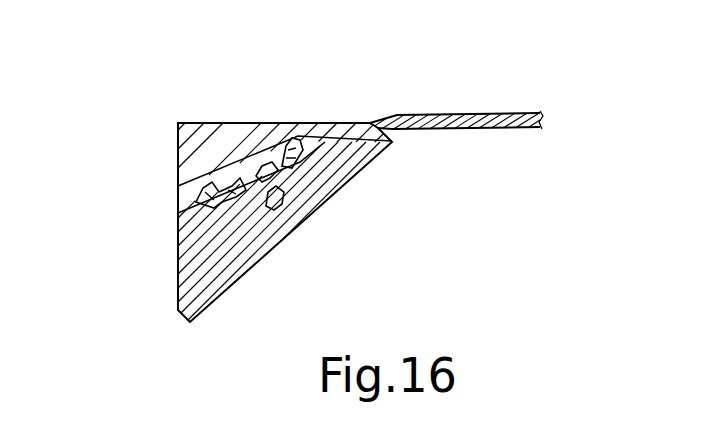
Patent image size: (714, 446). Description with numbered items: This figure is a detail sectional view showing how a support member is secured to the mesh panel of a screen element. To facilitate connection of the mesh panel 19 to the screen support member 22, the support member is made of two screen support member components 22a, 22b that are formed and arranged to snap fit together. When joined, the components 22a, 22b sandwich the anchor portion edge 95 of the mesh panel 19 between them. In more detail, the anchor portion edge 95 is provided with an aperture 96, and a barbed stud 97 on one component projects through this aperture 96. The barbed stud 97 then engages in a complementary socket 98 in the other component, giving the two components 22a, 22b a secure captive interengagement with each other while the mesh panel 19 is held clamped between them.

The mesh panel 19 is at (446, 114).
The screen support member 22 is at (173, 185).
The screen support member component 22a is at (177, 140).
The screen support member component 22b is at (195, 264).
The anchor portion edge 95 is at (242, 183).
The aperture 96 is at (315, 150).
The barbed stud 97 is at (300, 218).
The socket 98 is at (285, 190).